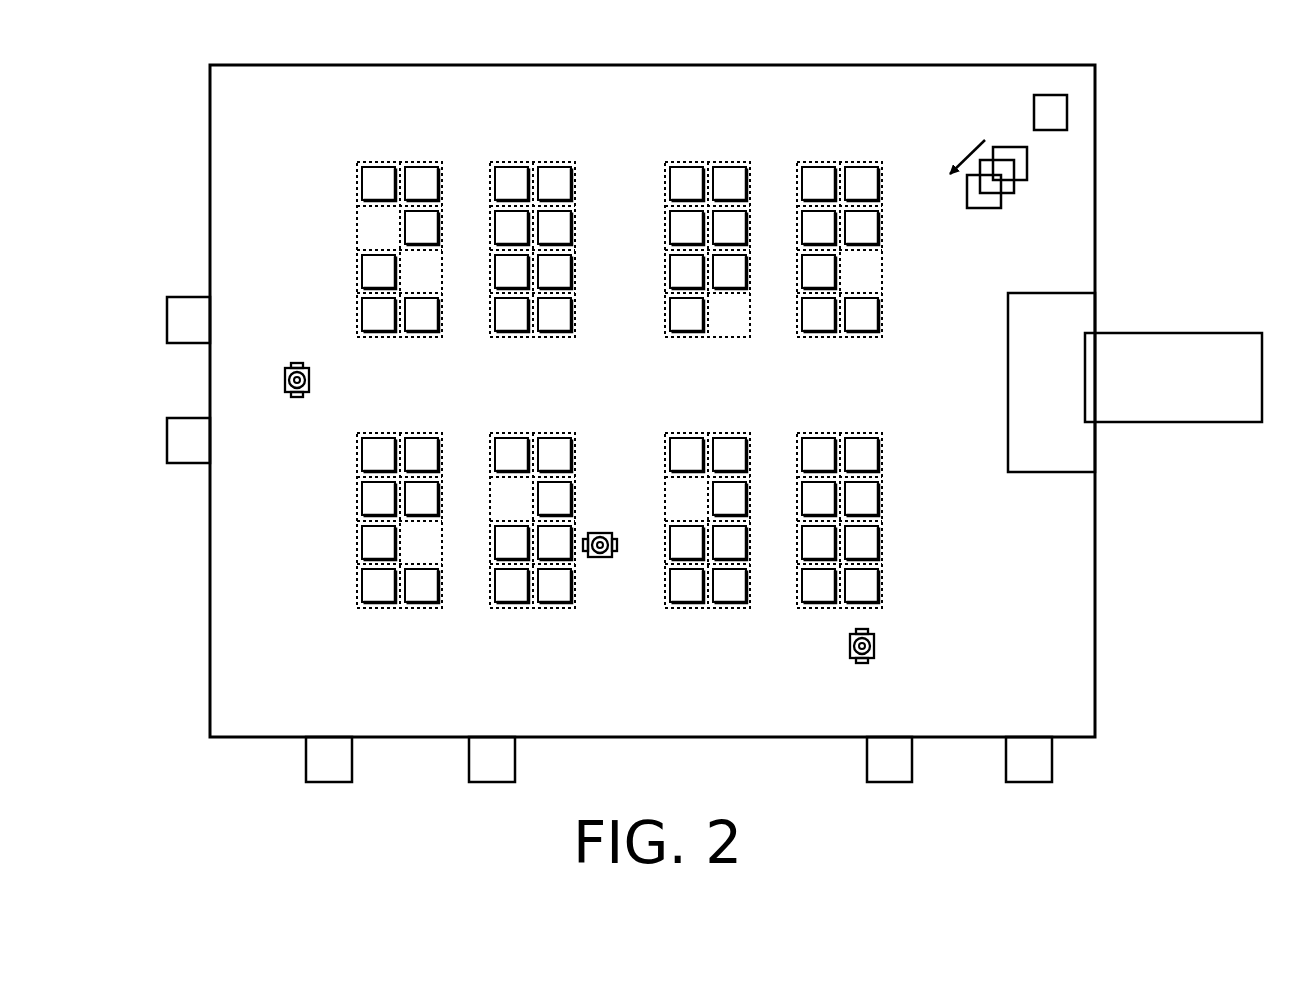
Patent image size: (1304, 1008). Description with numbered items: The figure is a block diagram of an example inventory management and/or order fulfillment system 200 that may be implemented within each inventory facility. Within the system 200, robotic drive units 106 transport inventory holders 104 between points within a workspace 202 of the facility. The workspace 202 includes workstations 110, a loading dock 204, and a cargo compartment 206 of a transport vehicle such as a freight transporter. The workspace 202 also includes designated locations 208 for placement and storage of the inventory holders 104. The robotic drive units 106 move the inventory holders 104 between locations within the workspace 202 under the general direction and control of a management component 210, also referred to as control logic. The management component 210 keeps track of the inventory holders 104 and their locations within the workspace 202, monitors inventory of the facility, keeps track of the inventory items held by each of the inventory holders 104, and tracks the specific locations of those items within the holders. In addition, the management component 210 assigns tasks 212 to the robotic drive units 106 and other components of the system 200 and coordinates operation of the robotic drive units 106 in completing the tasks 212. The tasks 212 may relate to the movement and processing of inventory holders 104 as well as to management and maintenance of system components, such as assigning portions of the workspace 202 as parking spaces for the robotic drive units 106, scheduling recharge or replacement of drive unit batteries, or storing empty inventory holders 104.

The inventory management and/or order fulfillment system 200 is at (149, 251).
The workspace 202 is at (282, 141).
The loading dock 204 is at (1022, 398).
The cargo compartment 206 is at (1203, 348).
The designated location 208 is at (533, 162).
The inventory holder 104 is at (815, 176).
The robotic drive unit 106 is at (293, 362).
The workstation 110 is at (170, 322).
The management component 210 is at (1040, 113).
The task 212 is at (985, 211).